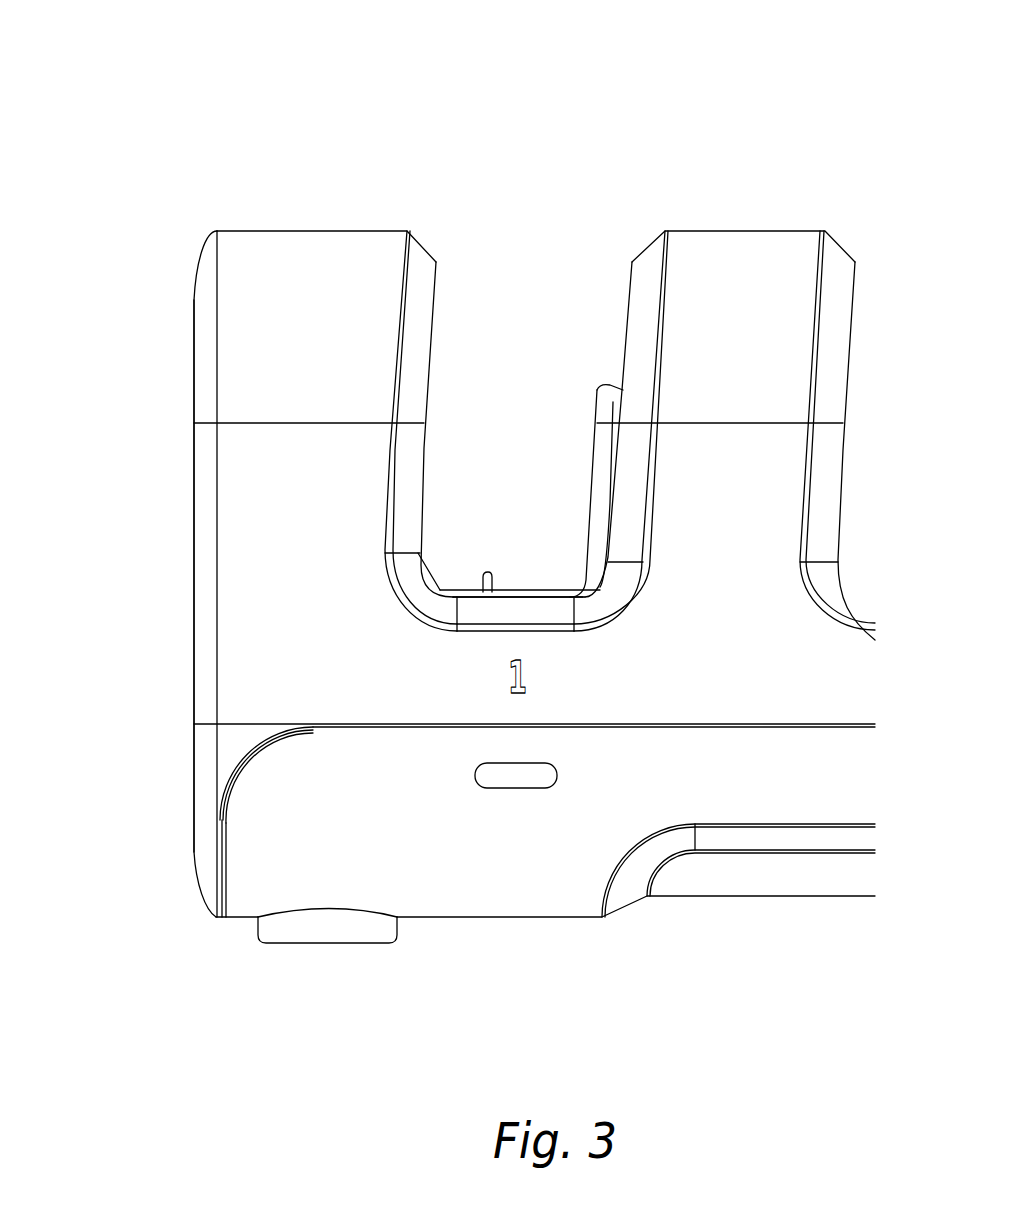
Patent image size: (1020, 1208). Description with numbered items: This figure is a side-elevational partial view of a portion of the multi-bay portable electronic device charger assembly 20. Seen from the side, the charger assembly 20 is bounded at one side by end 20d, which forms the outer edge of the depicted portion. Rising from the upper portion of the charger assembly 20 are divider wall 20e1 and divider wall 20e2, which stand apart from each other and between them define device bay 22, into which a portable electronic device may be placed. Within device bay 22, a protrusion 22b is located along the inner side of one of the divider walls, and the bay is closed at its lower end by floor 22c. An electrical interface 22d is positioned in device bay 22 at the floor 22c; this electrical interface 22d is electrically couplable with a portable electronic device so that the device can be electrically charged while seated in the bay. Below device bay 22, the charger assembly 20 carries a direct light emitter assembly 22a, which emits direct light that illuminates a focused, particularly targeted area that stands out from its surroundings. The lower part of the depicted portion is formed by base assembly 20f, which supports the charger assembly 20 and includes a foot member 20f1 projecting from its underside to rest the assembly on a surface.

The multi-bay portable electronic device charger assembly 20 is at (393, 60).
The end 20d is at (162, 682).
The divider wall 20e1 is at (335, 231).
The divider wall 20e2 is at (730, 231).
The base assembly 20f is at (545, 907).
The foot member 20f1 is at (340, 930).
The device bay 22 is at (541, 365).
The direct light emitter assembly 22a is at (510, 788).
The protrusion 22b is at (608, 405).
The floor 22c is at (550, 593).
The electrical interface 22d is at (486, 572).